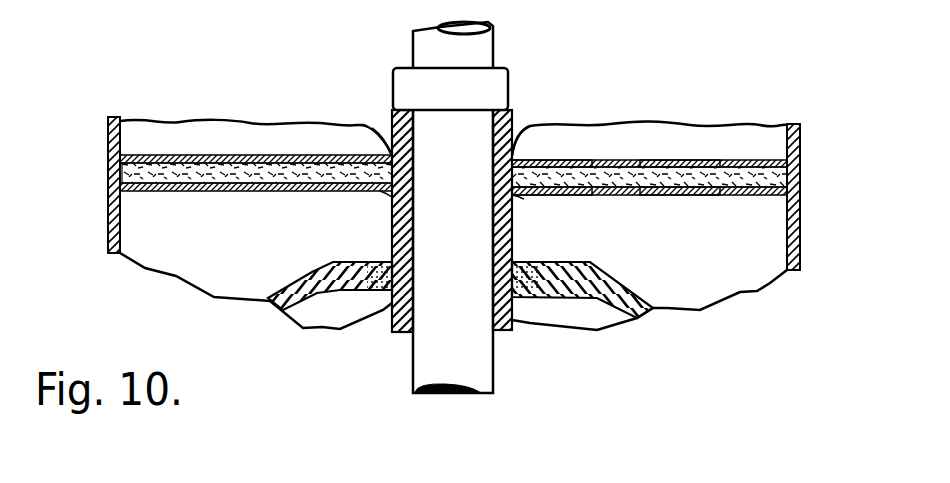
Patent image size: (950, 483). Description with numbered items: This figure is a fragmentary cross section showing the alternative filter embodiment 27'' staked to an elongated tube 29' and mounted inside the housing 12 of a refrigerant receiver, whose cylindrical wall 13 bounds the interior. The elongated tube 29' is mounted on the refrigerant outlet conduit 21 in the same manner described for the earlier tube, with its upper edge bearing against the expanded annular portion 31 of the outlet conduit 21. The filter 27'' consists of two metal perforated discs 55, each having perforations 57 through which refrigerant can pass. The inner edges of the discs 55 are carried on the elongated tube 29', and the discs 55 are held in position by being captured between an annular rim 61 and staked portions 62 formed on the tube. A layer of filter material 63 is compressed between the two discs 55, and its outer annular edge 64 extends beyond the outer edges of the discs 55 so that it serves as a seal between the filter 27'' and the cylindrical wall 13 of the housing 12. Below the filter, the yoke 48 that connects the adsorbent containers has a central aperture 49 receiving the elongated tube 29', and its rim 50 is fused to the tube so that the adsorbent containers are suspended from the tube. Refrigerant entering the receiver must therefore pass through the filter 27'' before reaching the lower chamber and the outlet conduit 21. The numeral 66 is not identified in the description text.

The housing 12 is at (800, 133).
The cylindrical wall 13 is at (800, 248).
The refrigerant outlet conduit 21 is at (413, 50).
The filter embodiment 27'' is at (761, 86).
The elongated tube 29' is at (499, 191).
The expanded annular portion 31 is at (508, 70).
The yoke 48 is at (322, 262).
The central aperture 49 is at (383, 310).
The rim 50 is at (520, 296).
The metal perforated discs 55 is at (614, 160).
The perforations 57 is at (570, 138).
The annular rim 61 is at (390, 195).
The staked portions 62 is at (380, 135).
The filter material 63 is at (258, 192).
The outer annular edge 64 is at (782, 173).
The upper face sheet 66 is at (268, 156).